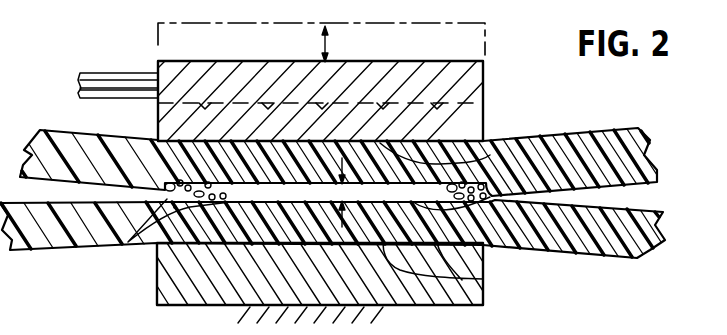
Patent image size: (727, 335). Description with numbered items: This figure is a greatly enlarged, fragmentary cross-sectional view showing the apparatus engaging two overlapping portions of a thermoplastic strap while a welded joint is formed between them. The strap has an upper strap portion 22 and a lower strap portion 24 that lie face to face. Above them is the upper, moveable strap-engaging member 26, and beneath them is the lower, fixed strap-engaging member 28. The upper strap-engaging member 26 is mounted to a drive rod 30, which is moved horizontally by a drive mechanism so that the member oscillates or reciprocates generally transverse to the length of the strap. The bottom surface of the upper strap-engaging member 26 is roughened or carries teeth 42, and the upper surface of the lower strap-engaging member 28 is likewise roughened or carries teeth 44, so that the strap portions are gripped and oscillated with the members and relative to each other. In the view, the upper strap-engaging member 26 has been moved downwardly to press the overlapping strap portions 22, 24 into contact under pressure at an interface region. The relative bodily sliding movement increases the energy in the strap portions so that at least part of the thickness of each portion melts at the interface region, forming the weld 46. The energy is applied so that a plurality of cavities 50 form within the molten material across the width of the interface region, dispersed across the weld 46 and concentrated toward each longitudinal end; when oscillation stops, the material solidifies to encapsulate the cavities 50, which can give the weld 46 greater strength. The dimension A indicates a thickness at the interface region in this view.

The upper strap portion 22 is at (612, 137).
The lower strap portion 24 is at (605, 258).
The upper strap-engaging member 26 is at (484, 84).
The lower strap-engaging member 28 is at (483, 297).
The drive rod 30 is at (106, 73).
The teeth 42 is at (490, 155).
The teeth 44 is at (483, 281).
The weld 46 is at (257, 191).
The cavities 50 is at (172, 202).
The gap thickness A is at (354, 198).